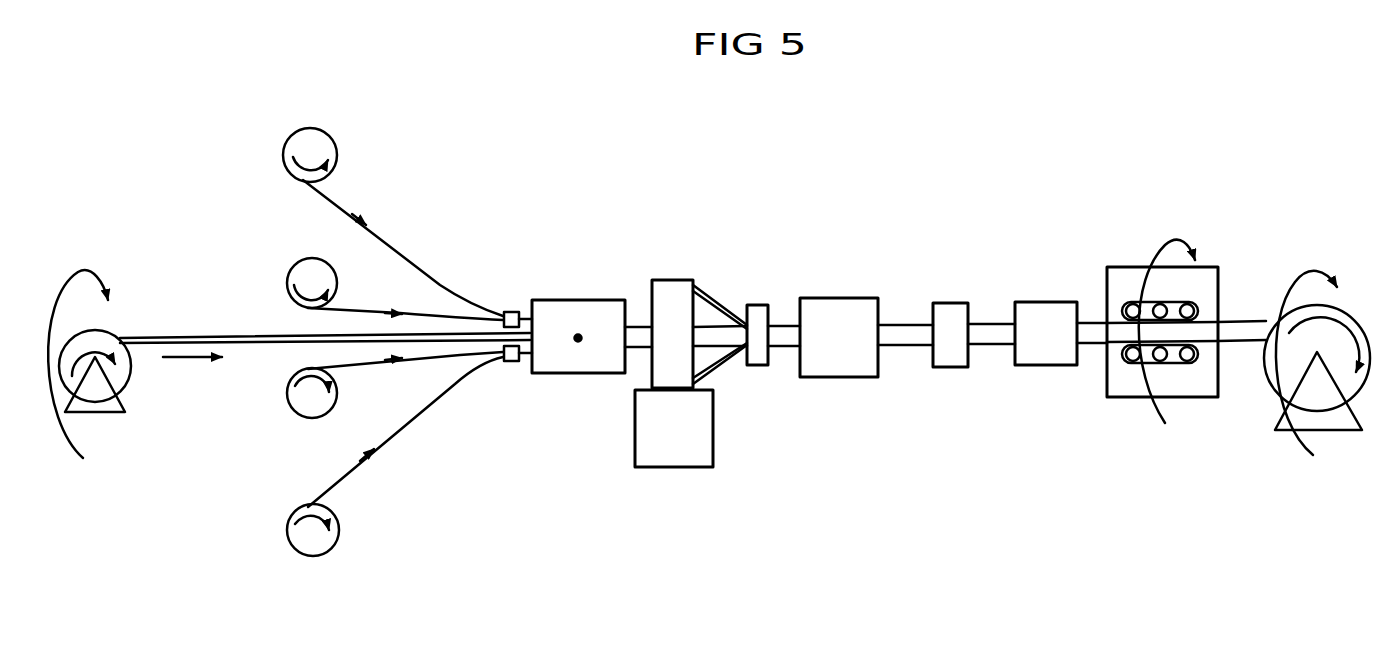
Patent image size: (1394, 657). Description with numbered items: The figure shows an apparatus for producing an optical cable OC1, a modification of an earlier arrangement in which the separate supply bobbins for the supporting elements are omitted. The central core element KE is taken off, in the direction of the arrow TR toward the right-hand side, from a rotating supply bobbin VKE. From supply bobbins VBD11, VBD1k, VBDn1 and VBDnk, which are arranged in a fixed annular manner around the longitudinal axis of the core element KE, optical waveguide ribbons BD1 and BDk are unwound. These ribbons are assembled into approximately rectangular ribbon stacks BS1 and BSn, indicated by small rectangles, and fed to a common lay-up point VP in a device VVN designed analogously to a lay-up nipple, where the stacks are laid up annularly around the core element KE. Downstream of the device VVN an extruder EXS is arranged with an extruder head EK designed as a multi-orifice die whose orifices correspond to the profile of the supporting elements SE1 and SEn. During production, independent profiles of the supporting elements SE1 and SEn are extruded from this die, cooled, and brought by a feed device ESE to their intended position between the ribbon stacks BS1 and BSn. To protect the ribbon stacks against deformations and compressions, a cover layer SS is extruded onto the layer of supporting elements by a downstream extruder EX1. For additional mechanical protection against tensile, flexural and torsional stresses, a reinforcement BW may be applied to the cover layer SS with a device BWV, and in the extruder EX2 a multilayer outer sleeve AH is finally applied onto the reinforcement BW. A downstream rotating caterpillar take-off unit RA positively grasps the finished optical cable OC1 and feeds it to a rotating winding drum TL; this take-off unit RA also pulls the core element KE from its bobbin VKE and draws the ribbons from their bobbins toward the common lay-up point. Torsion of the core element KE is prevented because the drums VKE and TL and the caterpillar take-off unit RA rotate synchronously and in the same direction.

The supply bobbin VKE is at (102, 340).
The central core element KE is at (240, 343).
The arrow TR is at (192, 375).
The supply bobbin VBD1k is at (323, 138).
The supply bobbin VBD11 is at (296, 275).
The supply bobbin VBDn1 is at (294, 408).
The supply bobbin VBDnk is at (330, 545).
The optical waveguide ribbon BDk is at (348, 208).
The optical waveguide ribbon BD1 is at (427, 318).
The ribbon stack BS1 is at (515, 312).
The ribbon stack BSn is at (515, 361).
The device VVN is at (582, 317).
The lay-up point VP is at (580, 338).
The extruder head EK is at (668, 280).
The extruder EXS is at (652, 453).
The supporting element SE1 is at (720, 292).
The supporting element SEn is at (725, 372).
The feed device ESE is at (762, 353).
The extruder EX1 is at (838, 310).
The cover layer SS is at (902, 330).
The device BWV is at (948, 317).
The reinforcement BW is at (992, 327).
The extruder EX2 is at (1052, 315).
The outer sleeve AH is at (1095, 343).
The caterpillar take-off unit RA is at (1135, 363).
The optical cable OC1 is at (1257, 318).
The winding drum TL is at (1340, 328).